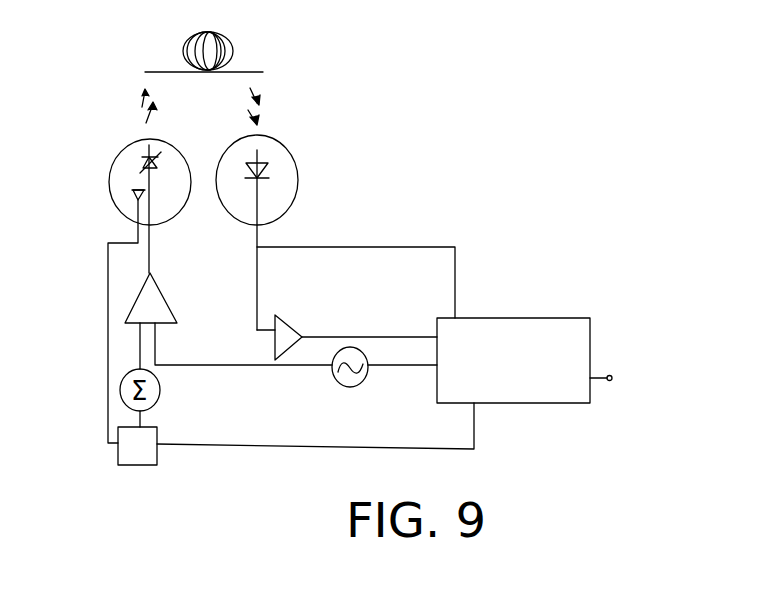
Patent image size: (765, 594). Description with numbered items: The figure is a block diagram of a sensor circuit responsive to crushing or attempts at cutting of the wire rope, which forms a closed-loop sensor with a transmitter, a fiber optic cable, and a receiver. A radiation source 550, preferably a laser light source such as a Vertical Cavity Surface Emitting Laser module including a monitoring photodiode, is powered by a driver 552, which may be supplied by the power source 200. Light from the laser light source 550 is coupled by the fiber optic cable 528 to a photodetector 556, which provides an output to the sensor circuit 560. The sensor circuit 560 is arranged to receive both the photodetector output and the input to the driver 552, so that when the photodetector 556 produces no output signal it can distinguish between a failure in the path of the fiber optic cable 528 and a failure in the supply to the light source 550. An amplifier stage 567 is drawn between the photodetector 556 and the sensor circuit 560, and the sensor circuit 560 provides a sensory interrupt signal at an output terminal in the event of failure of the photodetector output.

The fiber optic cable 528 is at (233, 50).
The radiation source 550 is at (120, 203).
The photodetector 556 is at (297, 188).
The driver 552 is at (171, 302).
The amplifier 567 is at (287, 318).
The sensor circuit 560 is at (520, 327).
The power source 200 is at (158, 461).